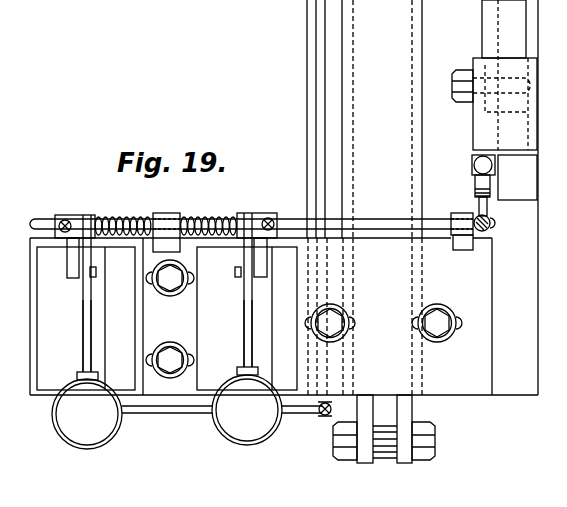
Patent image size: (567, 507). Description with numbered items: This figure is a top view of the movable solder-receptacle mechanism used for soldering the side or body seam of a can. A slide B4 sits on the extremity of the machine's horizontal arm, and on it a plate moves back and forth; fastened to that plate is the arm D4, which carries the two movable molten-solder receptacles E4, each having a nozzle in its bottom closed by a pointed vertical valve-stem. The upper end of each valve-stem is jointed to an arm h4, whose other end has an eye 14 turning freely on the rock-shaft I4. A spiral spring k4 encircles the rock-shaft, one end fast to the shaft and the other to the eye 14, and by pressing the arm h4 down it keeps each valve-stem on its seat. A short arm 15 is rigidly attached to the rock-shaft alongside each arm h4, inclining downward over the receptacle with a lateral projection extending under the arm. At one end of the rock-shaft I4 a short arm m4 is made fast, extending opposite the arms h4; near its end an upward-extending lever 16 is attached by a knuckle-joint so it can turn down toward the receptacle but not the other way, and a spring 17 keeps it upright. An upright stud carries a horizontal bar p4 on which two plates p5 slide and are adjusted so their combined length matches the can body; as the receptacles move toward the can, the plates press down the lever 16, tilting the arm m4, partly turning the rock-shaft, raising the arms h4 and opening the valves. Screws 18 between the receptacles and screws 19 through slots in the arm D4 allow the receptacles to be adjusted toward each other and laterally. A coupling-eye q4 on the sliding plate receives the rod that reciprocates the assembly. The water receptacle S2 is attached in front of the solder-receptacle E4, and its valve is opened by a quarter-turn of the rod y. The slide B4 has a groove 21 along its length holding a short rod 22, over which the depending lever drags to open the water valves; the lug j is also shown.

The groove 21 is at (320, 72).
The slide B4 is at (445, 197).
The arm D4 is at (284, 316).
The rock-shaft I4 is at (391, 223).
The spiral spring k4 is at (142, 220).
The short arm 15 is at (72, 256).
The eye 14 is at (88, 222).
The arm h4 is at (83, 345).
The movable molten-solder receptacle E4 is at (163, 316).
The screws 18 is at (170, 284).
The screws 19 is at (332, 323).
The water receptacle S2 is at (167, 412).
The rod y is at (162, 408).
The short rod 22 is at (320, 404).
The lug j is at (323, 416).
The coupling-eye q4 is at (370, 445).
The plates p5 is at (496, 29).
The upward-extending lever 16 is at (475, 164).
The spring 17 is at (476, 183).
The short arm m4 is at (487, 208).
The horizontal bar p4 is at (517, 177).